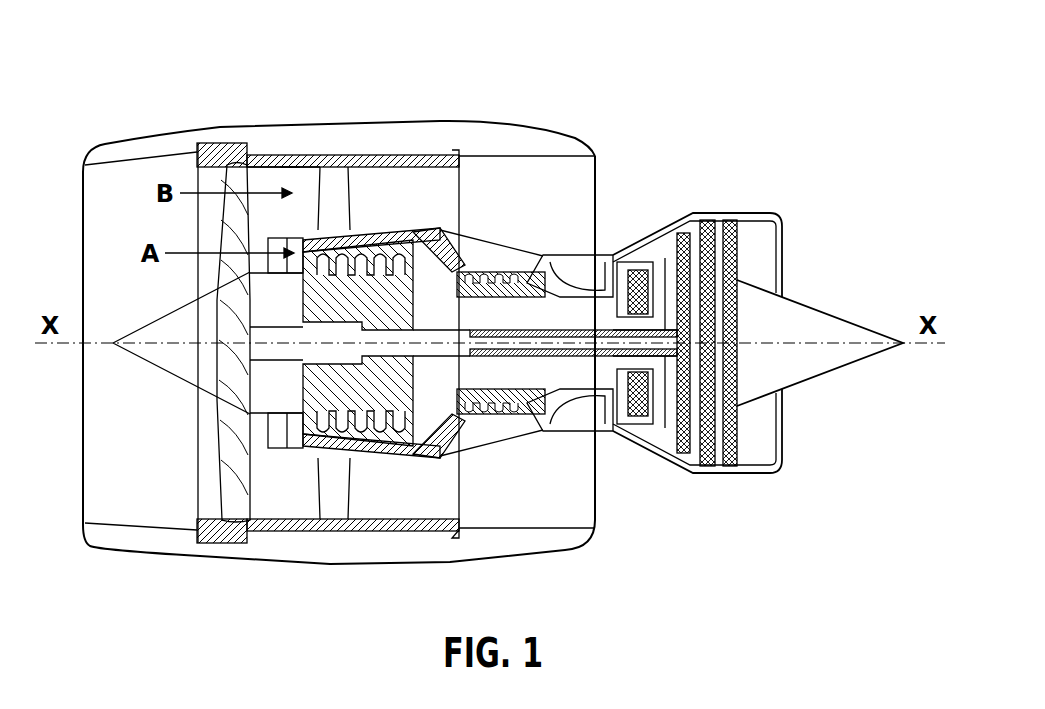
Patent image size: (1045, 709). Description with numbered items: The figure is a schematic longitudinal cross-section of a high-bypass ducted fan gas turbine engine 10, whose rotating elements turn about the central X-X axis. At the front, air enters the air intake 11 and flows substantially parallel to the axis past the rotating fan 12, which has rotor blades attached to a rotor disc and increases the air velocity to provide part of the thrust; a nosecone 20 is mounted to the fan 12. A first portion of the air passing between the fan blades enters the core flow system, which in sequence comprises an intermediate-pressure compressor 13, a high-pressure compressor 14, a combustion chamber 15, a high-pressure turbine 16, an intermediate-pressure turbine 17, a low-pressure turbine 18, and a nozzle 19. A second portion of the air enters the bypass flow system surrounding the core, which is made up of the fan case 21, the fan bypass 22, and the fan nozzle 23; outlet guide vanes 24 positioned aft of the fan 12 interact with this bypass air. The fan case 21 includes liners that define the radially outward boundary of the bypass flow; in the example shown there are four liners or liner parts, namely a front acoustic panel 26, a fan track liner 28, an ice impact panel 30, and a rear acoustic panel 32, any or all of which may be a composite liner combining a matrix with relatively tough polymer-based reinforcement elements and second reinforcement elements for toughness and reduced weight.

The high-bypass gas turbine engine 10 is at (133, 83).
The air intake 11 is at (106, 235).
The fan 12 is at (223, 480).
The intermediate-pressure compressor 13 is at (383, 458).
The high-pressure compressor 14 is at (500, 265).
The combustion chamber 15 is at (528, 440).
The high-pressure turbine 16 is at (585, 452).
The intermediate-pressure turbine 17 is at (653, 233).
The low-pressure turbine 18 is at (668, 460).
The nozzle 19 is at (773, 215).
The nosecone 20 is at (152, 370).
The fan case 21 is at (373, 160).
The fan bypass 22 is at (484, 191).
The fan nozzle 23 is at (597, 152).
The outlet guide vanes 24 is at (330, 165).
The front acoustic panel 26 is at (140, 158).
The fan track liner 28 is at (230, 160).
The ice impact panel 30 is at (270, 165).
The rear acoustic panel 32 is at (293, 165).